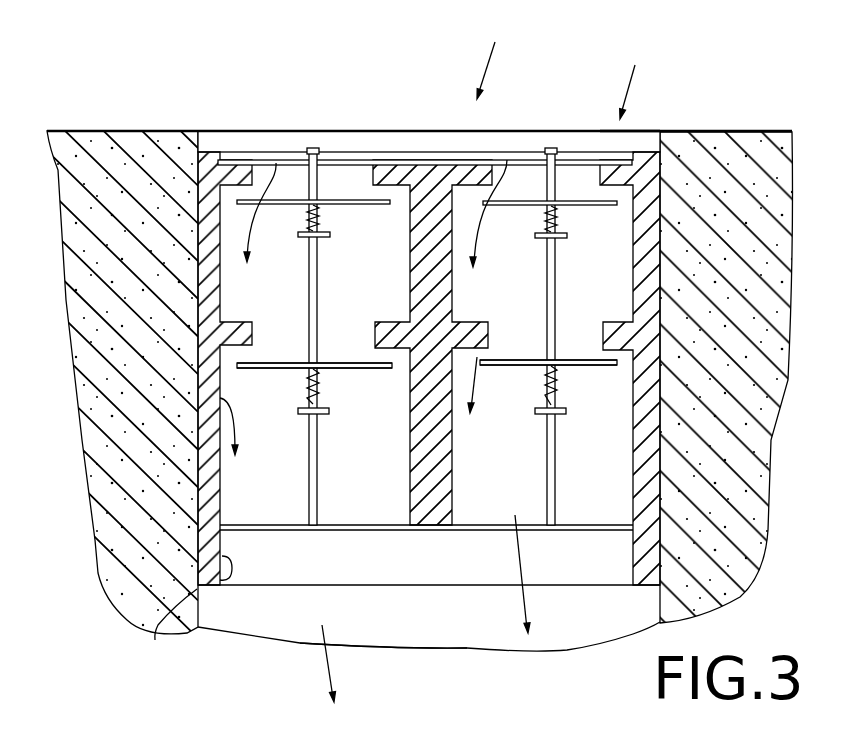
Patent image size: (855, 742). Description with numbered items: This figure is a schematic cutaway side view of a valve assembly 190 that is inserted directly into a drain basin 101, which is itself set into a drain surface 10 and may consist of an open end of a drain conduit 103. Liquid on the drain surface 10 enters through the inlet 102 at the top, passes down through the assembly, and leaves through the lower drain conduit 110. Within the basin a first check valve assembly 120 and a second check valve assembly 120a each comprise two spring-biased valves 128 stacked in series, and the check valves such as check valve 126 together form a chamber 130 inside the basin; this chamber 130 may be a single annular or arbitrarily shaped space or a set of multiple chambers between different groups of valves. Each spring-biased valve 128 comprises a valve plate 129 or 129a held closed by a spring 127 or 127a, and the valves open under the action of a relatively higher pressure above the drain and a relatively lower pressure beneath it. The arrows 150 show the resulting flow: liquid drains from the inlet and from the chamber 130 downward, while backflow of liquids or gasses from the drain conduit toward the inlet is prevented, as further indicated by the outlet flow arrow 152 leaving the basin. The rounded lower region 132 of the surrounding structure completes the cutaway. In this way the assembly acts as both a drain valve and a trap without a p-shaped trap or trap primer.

The drain surface 10 is at (728, 132).
The drain basin 101 is at (652, 152).
The inlet 102 is at (362, 131).
The drain conduit 103 is at (395, 640).
The drain conduit 110 is at (508, 646).
The first check valve assembly 120 is at (233, 108).
The second check valve assembly 120a is at (638, 87).
The check valve 126 is at (372, 370).
The spring 127 is at (303, 386).
The spring 127a is at (312, 220).
The spring-biased valve 128 is at (298, 196).
The valve plate 129 is at (348, 361).
The valve plate 129a is at (380, 210).
The chamber 130 is at (385, 300).
The rounded bottom of concrete 132 is at (152, 636).
The arrows 150 is at (276, 163).
The outlet flow 152 is at (527, 607).
The valve assembly 190 is at (504, 59).